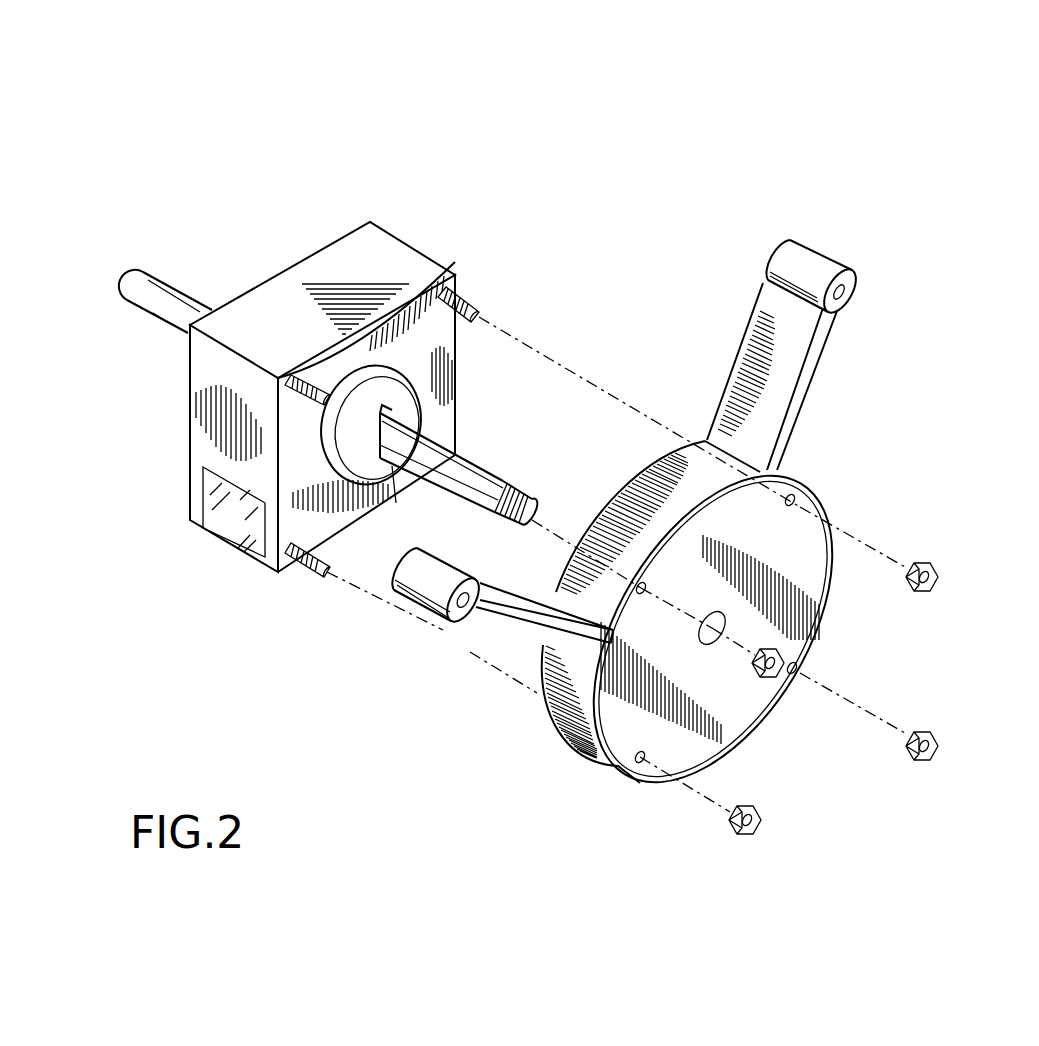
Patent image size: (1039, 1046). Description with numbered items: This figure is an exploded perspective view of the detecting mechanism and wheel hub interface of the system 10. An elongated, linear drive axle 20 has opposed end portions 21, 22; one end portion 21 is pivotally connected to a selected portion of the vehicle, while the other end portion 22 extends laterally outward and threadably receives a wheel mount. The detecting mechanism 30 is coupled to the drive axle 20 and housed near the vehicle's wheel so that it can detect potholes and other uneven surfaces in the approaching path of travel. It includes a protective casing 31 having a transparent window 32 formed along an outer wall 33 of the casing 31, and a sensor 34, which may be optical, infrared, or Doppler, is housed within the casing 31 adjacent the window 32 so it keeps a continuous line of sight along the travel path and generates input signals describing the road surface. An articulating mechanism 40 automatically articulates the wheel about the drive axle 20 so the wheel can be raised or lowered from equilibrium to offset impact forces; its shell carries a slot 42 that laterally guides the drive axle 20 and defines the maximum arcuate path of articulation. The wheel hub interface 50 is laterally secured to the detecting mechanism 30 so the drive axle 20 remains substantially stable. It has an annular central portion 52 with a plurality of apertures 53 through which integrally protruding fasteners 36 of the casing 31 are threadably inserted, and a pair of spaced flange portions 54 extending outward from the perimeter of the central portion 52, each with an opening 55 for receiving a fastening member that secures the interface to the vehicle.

The system 10 is at (737, 149).
The drive axle 20 is at (470, 453).
The end portion 21 is at (165, 283).
The end portion 22 is at (515, 497).
The detecting mechanism 30 is at (278, 402).
The protective casing 31 is at (342, 253).
The transparent window 32 is at (213, 537).
The outer wall 33 is at (205, 440).
The sensor 34 is at (243, 575).
The fasteners 36 is at (517, 255).
The articulating mechanism 40 is at (358, 562).
The slot 42 is at (396, 503).
The wheel hub interface 50 is at (665, 529).
The annular central portion 52 is at (813, 612).
The apertures 53 is at (645, 586).
The flange portions 54 is at (820, 248).
The opening 55 is at (853, 292).